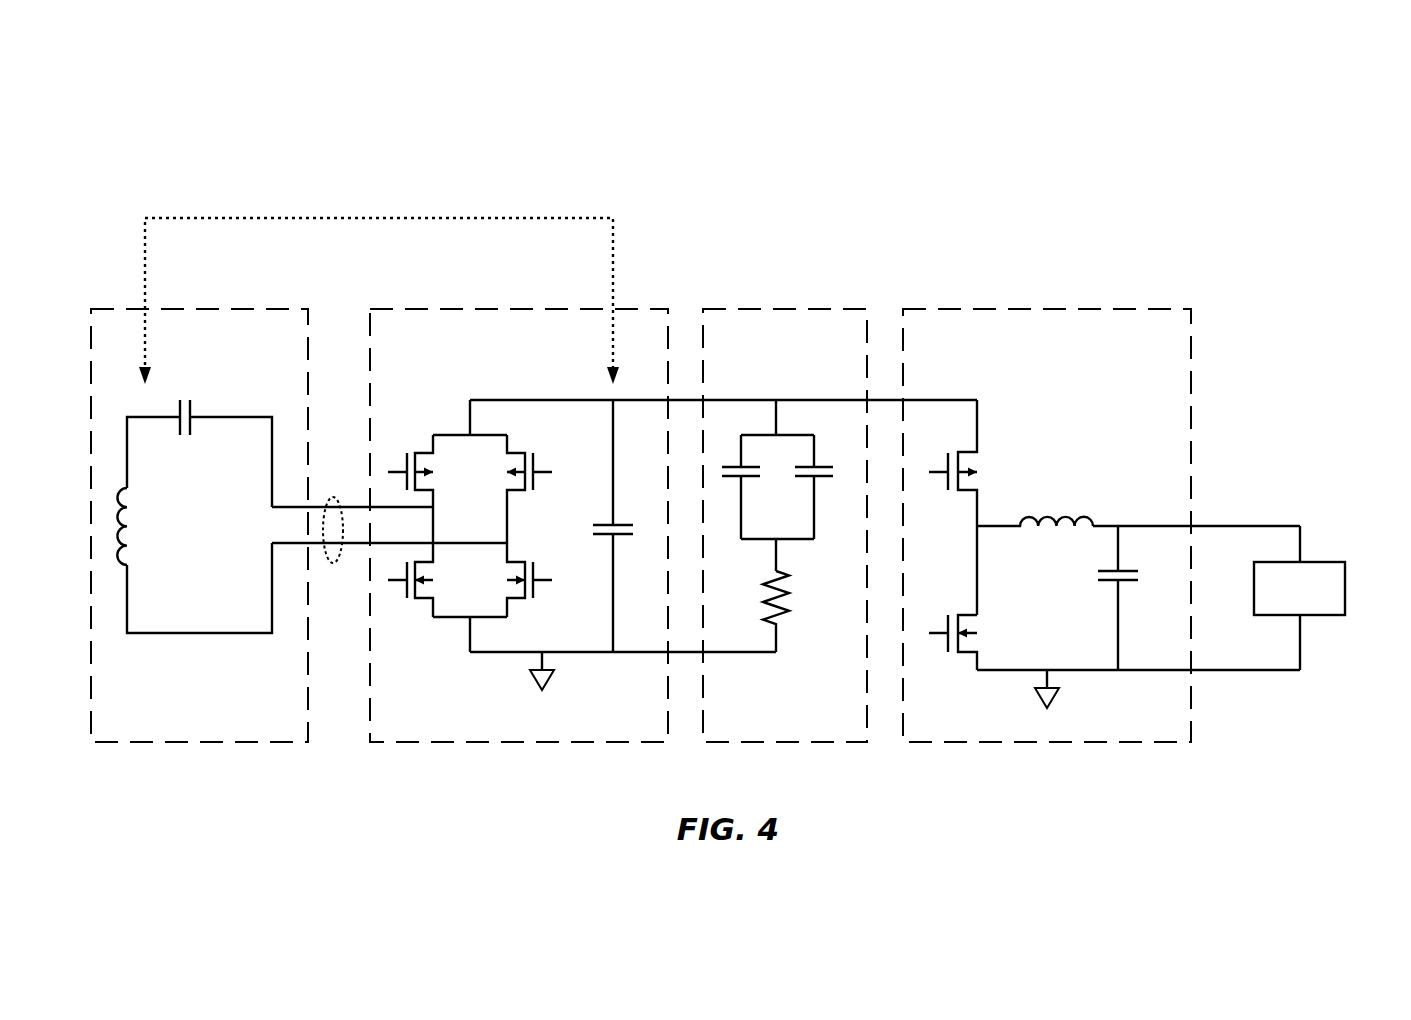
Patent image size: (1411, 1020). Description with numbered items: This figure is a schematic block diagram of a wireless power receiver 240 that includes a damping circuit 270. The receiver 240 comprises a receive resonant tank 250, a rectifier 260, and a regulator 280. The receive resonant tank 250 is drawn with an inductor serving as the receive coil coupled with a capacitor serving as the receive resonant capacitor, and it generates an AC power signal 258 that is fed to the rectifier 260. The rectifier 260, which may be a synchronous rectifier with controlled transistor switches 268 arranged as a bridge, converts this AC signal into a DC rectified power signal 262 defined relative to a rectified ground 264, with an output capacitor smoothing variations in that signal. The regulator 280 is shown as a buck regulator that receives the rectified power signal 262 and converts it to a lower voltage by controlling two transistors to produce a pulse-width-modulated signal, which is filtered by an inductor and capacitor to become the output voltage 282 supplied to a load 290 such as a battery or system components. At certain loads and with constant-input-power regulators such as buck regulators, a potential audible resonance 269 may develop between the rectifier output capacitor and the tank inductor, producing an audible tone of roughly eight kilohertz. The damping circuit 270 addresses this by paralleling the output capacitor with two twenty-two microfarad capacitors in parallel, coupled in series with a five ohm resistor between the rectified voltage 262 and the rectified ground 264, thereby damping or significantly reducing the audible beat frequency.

The wireless power receiver 240 is at (703, 216).
The receive resonant tank 250 is at (212, 309).
The AC power signal 258 is at (334, 497).
The rectifier 260 is at (509, 309).
The DC rectified power signal 262 is at (548, 400).
The rectified ground 264 is at (595, 657).
The rectifier bridge transistors 268 is at (434, 638).
The potential audible resonance 269 is at (378, 217).
The damping circuit 270 is at (763, 309).
The regulator 280 is at (1010, 308).
The output voltage 282 is at (1247, 525).
The load 290 is at (1333, 562).